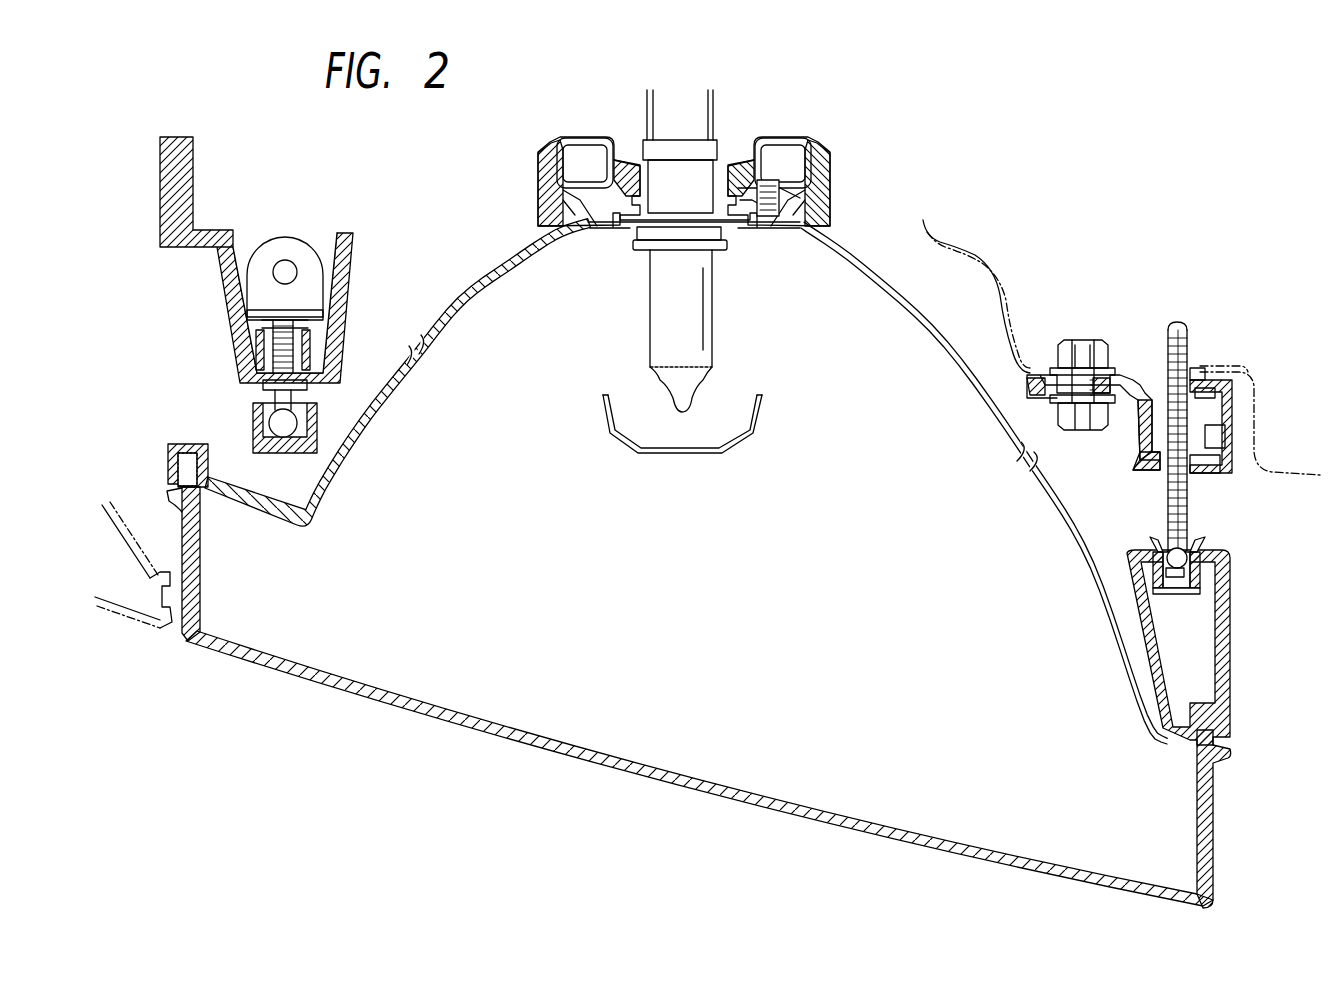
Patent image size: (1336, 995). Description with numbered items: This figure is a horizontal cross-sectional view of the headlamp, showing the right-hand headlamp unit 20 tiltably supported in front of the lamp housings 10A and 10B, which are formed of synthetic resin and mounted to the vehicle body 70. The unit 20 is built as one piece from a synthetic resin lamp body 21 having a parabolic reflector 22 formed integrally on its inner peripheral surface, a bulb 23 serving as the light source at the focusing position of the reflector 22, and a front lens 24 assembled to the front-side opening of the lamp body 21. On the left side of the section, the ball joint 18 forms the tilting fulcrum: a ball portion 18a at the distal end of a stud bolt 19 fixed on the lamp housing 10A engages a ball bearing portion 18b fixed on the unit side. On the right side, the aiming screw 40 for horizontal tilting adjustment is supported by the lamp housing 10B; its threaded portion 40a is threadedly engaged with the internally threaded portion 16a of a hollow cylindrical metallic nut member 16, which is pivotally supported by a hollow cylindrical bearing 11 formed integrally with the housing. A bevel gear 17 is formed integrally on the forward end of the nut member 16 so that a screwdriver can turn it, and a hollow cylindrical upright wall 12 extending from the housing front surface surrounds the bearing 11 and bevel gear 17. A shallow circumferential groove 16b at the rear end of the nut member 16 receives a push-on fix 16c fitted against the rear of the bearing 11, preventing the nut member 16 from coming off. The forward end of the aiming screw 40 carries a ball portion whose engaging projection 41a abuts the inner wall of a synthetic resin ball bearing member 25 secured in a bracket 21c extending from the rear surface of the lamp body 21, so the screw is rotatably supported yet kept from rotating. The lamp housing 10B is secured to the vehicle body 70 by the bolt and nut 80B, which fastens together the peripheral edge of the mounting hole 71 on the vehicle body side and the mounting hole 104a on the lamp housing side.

The lamp housing 10A is at (158, 196).
The lamp housing 10B is at (1137, 385).
The bearing 11 is at (1230, 442).
The upright wall 12 is at (1240, 455).
The nut member 16 is at (1232, 393).
The internally threaded portion 16a is at (1166, 484).
The groove 16b is at (1210, 375).
The push-on fix 16c is at (1215, 390).
The bevel gear 17 is at (1220, 478).
The ball joint 18 is at (213, 414).
The ball portion 18a is at (270, 418).
The ball bearing portion 18b is at (272, 436).
The stud bolt 19 is at (265, 386).
The headlamp unit 20 is at (368, 708).
The lamp body 21 is at (455, 300).
The bracket 21c is at (1236, 664).
The reflector 22 is at (858, 290).
The bulb 23 is at (652, 317).
The front lens 24 is at (548, 768).
The ball bearing member 25 is at (1205, 585).
The aiming screw 40 is at (1192, 507).
The threaded portion 40a is at (1179, 322).
The engaging projection 41a is at (1172, 594).
The vehicle body 70 is at (965, 242).
The mounting hole 71 is at (1096, 360).
The bolt and nut 80B is at (1080, 336).
The mounting hole 104a is at (1068, 345).